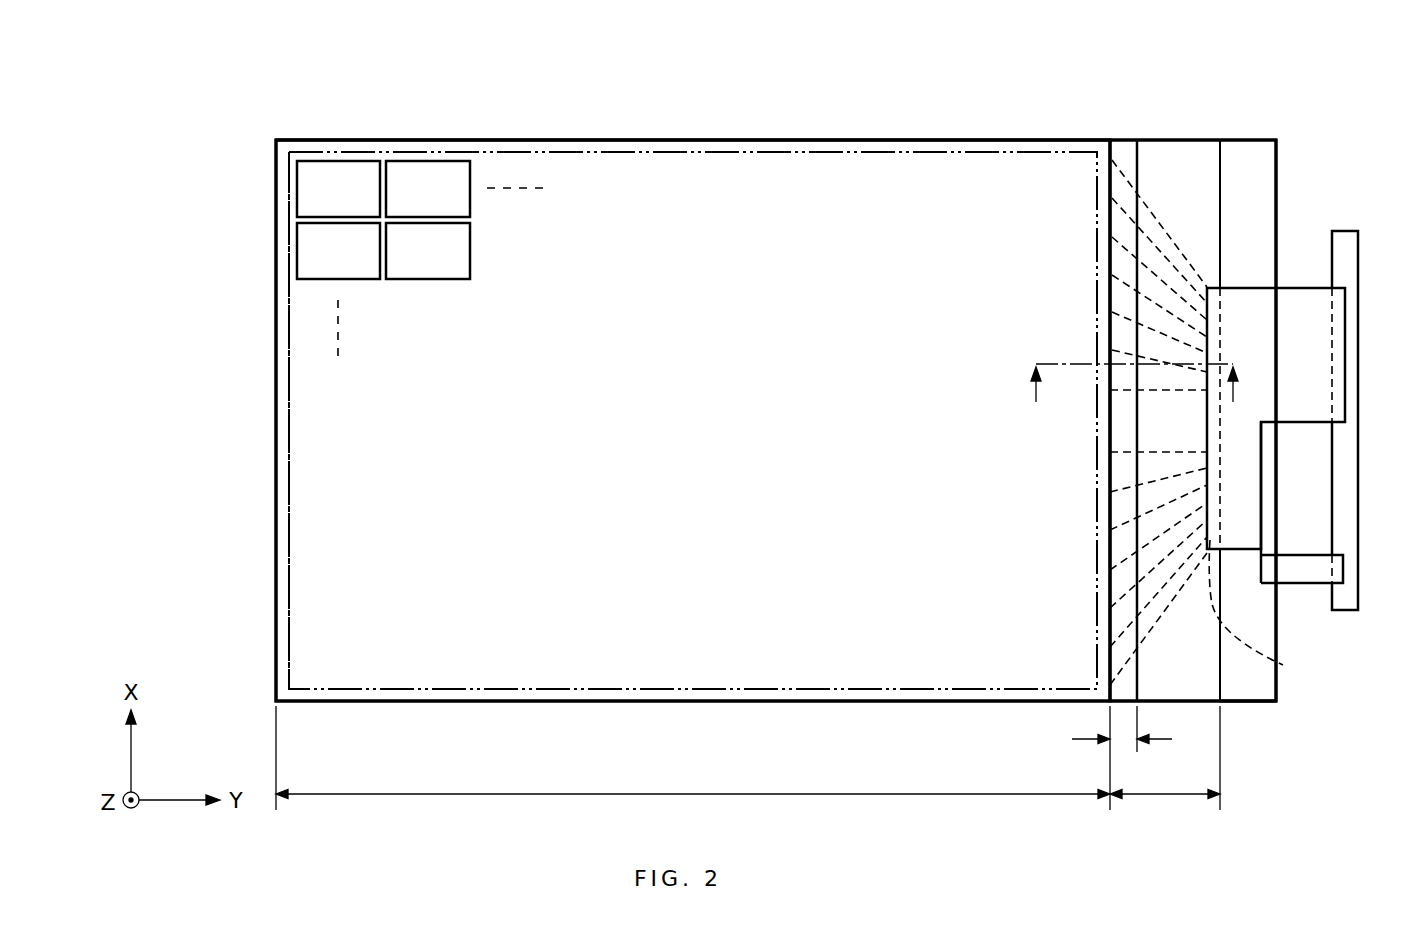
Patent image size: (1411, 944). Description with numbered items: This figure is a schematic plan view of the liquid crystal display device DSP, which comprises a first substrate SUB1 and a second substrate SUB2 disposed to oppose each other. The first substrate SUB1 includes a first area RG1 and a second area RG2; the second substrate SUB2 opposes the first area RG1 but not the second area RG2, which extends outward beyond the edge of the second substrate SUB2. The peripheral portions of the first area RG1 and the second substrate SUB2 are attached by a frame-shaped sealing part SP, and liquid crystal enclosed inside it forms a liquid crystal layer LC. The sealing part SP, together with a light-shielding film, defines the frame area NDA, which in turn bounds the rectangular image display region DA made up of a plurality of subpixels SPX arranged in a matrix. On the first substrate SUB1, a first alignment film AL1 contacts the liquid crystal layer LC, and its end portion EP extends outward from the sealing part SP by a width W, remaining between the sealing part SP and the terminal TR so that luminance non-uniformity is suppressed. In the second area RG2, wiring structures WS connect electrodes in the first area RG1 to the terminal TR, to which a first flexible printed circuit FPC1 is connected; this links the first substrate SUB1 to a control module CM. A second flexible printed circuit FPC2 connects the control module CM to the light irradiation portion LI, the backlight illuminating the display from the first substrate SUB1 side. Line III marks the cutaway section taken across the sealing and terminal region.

The liquid crystal display device DSP is at (1308, 80).
The second substrate SUB2 is at (884, 140).
The first substrate SUB1 is at (1196, 140).
The frame area NDA is at (755, 147).
The image display region DA is at (634, 162).
The sealing part SP is at (987, 147).
The liquid crystal layer LC is at (304, 512).
The subpixels SPX is at (422, 166).
The first alignment film AL1 is at (1123, 150).
The end portion of the first alignment film EP is at (1174, 394).
The wiring structures WS is at (1168, 228).
The first flexible printed circuit FPC1 is at (1312, 288).
The second flexible printed circuit FPC2 is at (1307, 586).
The control module CM is at (1343, 228).
The terminal TR is at (1283, 665).
The light irradiation portion LI is at (1253, 705).
The line III- III is at (1028, 412).
The width W is at (1122, 758).
The first area RG1 is at (693, 763).
The second area RG2 is at (1165, 763).